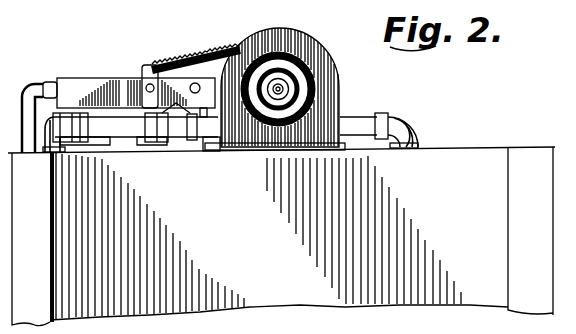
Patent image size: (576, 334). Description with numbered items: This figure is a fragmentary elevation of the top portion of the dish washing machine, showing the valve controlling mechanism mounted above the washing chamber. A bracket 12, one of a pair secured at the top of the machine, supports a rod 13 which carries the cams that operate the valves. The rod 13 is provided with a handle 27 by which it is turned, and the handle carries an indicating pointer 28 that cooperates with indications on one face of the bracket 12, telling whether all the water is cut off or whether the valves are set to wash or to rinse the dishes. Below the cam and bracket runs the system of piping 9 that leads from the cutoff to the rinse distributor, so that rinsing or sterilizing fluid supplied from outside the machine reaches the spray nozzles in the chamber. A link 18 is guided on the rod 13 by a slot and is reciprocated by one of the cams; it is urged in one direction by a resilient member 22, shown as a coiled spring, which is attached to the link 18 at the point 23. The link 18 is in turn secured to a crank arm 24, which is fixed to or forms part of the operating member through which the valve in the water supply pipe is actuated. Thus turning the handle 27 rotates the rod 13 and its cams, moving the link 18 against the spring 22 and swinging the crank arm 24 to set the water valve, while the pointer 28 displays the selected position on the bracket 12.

The system of piping 9 is at (116, 138).
The bracket 12 is at (299, 41).
The rod 13 is at (262, 108).
The link 18 is at (103, 80).
The resilient member 22 is at (196, 49).
The attachment point of spring 23 is at (145, 70).
The crank arm 24 is at (48, 87).
The handle 27 is at (318, 98).
The indicating pointer 28 is at (280, 130).